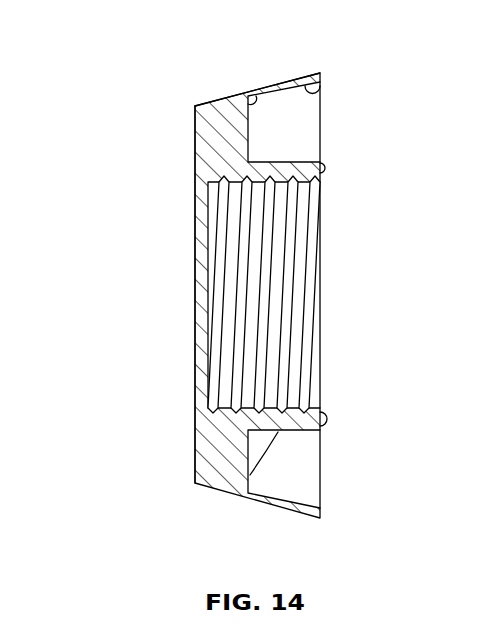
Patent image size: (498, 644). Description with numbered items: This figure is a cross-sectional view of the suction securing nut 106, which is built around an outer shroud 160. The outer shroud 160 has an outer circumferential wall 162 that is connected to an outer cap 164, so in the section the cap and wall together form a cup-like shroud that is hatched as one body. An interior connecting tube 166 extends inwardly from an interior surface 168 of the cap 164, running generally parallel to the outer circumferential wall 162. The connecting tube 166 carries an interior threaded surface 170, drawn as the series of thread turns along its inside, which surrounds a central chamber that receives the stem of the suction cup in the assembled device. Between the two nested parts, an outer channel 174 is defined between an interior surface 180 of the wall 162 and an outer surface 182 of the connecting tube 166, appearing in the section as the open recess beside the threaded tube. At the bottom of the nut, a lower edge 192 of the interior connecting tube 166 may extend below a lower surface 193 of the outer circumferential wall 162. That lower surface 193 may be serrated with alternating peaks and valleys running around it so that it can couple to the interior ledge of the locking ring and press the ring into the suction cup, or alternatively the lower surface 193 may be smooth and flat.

The suction securing nut 106 is at (118, 51).
The outer shroud 160 is at (193, 487).
The outer circumferential wall 162 is at (268, 92).
The outer cap 164 is at (195, 240).
The interior connecting tube 166 is at (290, 162).
The interior surface 168 is at (256, 92).
The interior threaded surface 170 is at (297, 265).
The outer channel 174 is at (307, 484).
The interior surface 180 is at (325, 89).
The outer surface 182 is at (250, 475).
The lower edge 192 is at (326, 171).
The lower surface 193 is at (320, 72).